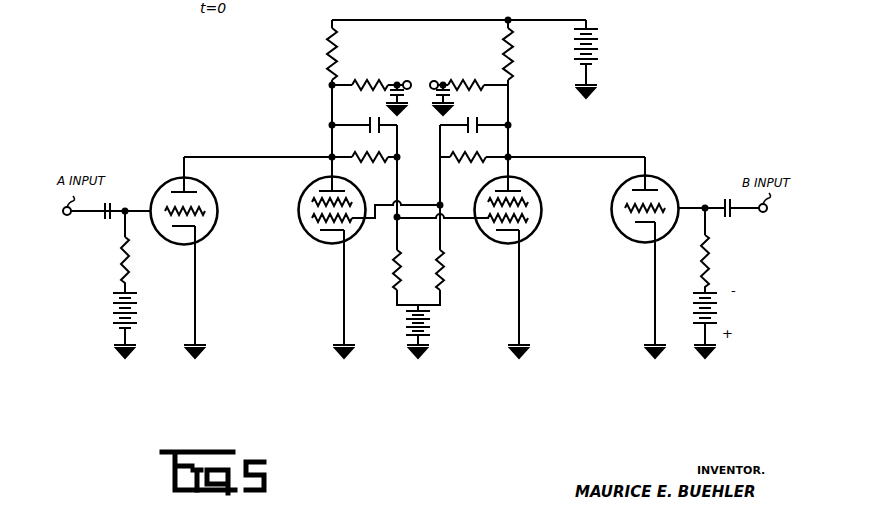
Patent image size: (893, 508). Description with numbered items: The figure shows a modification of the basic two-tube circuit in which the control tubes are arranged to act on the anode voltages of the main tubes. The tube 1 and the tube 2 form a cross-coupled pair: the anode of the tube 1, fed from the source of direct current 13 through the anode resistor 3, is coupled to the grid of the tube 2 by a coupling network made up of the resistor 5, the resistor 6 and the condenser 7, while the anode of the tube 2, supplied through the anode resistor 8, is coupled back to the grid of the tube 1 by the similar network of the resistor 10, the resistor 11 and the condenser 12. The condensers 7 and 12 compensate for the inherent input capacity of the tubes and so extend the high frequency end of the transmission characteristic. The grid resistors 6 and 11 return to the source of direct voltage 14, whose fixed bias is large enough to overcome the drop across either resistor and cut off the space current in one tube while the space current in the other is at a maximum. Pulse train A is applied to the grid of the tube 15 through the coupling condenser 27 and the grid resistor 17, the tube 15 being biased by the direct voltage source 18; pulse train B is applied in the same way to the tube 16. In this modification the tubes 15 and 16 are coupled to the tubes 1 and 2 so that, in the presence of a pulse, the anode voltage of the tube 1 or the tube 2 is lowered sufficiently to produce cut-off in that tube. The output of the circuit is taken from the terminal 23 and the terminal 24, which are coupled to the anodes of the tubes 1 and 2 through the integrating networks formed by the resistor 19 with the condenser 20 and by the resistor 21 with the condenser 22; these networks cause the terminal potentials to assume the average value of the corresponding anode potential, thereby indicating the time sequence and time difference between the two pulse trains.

The tube 1 is at (300, 192).
The tube 2 is at (542, 219).
The anode resistor 3 is at (335, 58).
The resistor 5 is at (369, 163).
The resistor 6 is at (393, 275).
The condenser 7 is at (369, 131).
The anode resistor 8 is at (511, 58).
The resistor 10 is at (451, 164).
The resistor 11 is at (445, 275).
The condenser 12 is at (478, 124).
The source of direct current 13 is at (604, 53).
The source of direct voltage 14 is at (436, 325).
The tube 15 is at (219, 228).
The tube 16 is at (668, 195).
The grid resistor 17 is at (132, 265).
The direct voltage source 18 is at (138, 312).
The integrating network resistor 19 is at (370, 76).
The integrating network condenser 20 is at (390, 98).
The integrating network resistor 21 is at (469, 76).
The integrating network condenser 22 is at (451, 103).
The output terminal 23 is at (409, 75).
The output terminal 24 is at (442, 75).
The coupling condenser 27 is at (103, 218).